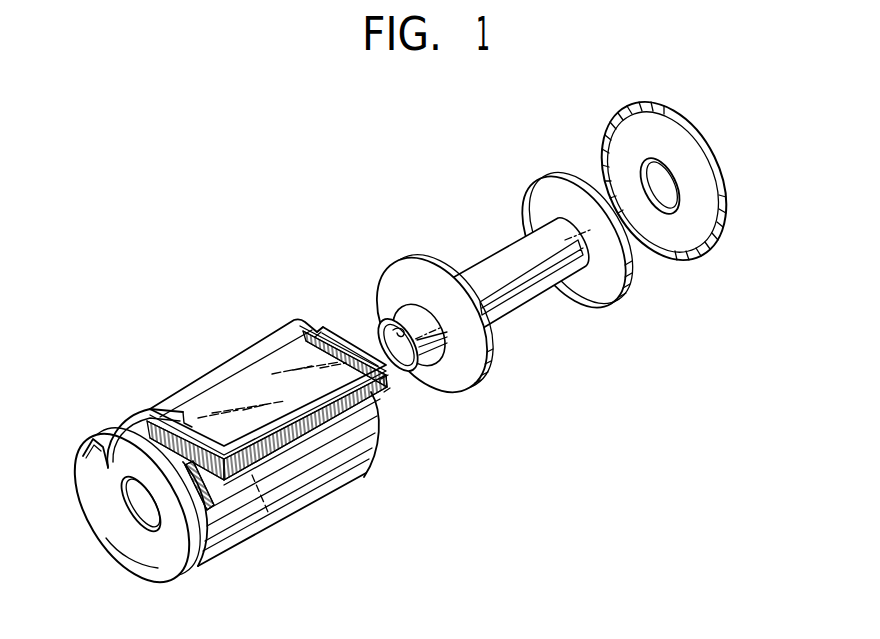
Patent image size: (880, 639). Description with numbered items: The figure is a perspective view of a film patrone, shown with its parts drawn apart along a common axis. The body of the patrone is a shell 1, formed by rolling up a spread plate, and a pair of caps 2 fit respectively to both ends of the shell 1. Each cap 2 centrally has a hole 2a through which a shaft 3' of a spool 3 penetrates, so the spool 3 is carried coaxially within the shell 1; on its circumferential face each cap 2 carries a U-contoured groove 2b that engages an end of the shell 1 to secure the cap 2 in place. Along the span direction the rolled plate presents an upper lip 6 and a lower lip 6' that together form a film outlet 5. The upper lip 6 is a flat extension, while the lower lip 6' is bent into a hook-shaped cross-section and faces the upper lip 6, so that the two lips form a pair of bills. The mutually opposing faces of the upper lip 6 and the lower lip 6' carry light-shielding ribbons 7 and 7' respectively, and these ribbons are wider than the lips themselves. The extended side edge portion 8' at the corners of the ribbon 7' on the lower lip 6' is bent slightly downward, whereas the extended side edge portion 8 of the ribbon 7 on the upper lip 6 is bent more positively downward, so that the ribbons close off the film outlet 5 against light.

The shell 1 is at (196, 366).
The cap 2 is at (124, 566).
The hole 2a is at (664, 177).
The U-contoured groove 2b is at (86, 450).
The spool 3 is at (504, 283).
The shaft 3' is at (398, 293).
The film outlet 5 is at (328, 436).
The upper lip 6 is at (268, 365).
The lower lip 6' is at (290, 503).
The light-shielding ribbon 7 is at (268, 369).
The light-shielding ribbon 7' is at (295, 471).
The extended side edge portion 8 is at (245, 373).
The extended side edge portion 8' is at (307, 487).